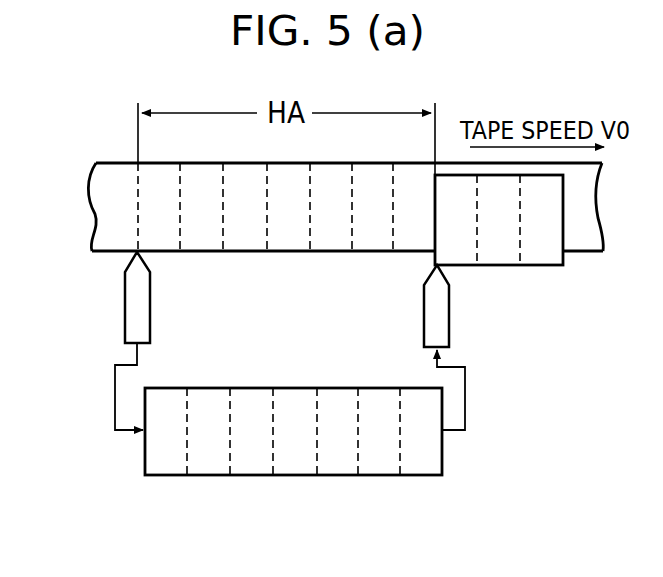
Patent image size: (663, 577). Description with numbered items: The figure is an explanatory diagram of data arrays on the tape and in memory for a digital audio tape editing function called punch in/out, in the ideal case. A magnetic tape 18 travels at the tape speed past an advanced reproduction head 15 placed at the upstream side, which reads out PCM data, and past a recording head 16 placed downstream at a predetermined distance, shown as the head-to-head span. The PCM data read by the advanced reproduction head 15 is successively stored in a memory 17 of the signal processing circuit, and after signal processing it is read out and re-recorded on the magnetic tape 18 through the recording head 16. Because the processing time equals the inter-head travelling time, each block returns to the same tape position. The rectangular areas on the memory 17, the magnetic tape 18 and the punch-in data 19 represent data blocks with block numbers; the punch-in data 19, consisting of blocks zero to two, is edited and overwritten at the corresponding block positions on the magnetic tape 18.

The advanced reproduction head 15 is at (125, 311).
The recording head 16 is at (449, 315).
The memory 17 is at (310, 477).
The magnetic tape 18 is at (287, 258).
The punch-in data 19 is at (547, 268).